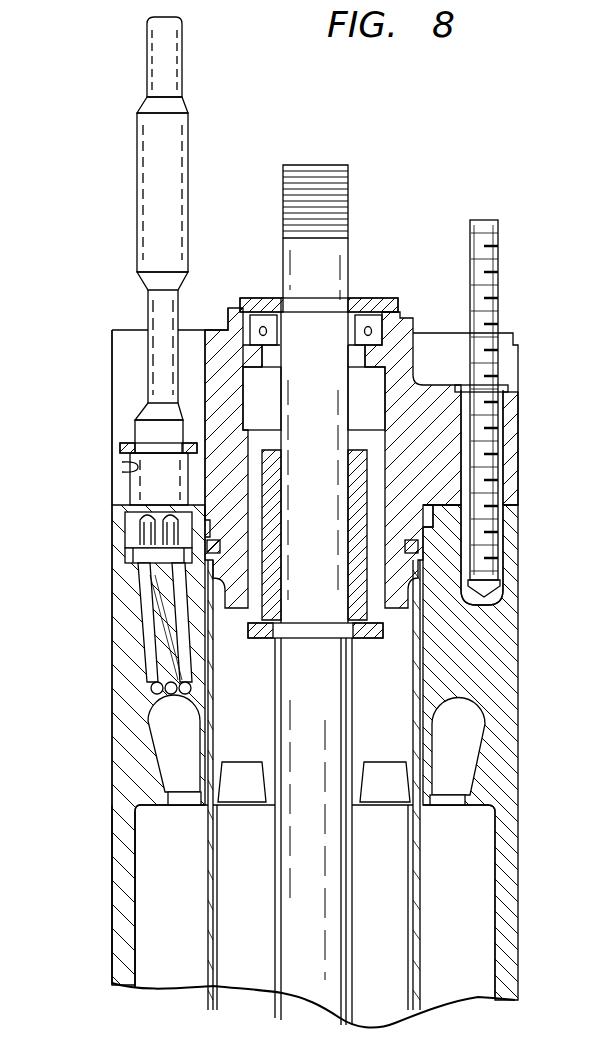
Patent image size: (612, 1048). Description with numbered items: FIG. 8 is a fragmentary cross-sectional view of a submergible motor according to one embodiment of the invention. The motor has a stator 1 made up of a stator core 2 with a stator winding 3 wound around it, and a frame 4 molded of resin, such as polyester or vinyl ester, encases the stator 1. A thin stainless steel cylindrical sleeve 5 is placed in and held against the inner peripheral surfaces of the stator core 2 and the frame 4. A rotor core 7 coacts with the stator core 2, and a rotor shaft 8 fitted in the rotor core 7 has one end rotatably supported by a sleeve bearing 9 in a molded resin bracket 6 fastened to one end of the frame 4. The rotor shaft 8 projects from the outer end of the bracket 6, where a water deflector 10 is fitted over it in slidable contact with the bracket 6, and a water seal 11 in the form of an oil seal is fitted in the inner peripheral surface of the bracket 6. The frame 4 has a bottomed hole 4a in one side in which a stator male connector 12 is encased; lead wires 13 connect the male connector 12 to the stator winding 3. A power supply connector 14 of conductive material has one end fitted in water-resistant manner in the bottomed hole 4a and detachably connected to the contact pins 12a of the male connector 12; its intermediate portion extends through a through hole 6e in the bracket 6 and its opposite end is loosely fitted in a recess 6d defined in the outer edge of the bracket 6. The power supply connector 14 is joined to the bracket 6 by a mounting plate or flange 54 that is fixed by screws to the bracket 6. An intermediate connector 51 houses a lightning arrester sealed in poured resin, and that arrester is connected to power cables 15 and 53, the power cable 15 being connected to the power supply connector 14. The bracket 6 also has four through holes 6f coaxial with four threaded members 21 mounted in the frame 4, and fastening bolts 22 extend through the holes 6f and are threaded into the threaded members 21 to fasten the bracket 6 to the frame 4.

The stator 1 is at (482, 828).
The stator core 2 is at (505, 942).
The stator winding 3 is at (475, 728).
The frame 4 is at (503, 642).
The bottomed hole 4a is at (135, 522).
The cylindrical sleeve 5 is at (420, 690).
The bracket 6 is at (510, 415).
The recess 6d is at (208, 345).
The through hole 6e is at (132, 468).
The through holes 6f is at (492, 460).
The rotor core 7 is at (405, 903).
The rotor shaft 8 is at (340, 250).
The sleeve bearing 9 is at (270, 535).
The water deflector 10 is at (358, 300).
The water seal 11 is at (380, 325).
The stator male connector 12 is at (127, 556).
The contact pins 12a is at (135, 540).
The lead wires 13 is at (148, 660).
The power supply connector 14 is at (143, 425).
The power cable 15 is at (148, 300).
The threaded members 21 is at (503, 540).
The fastening bolts 22 is at (500, 268).
The intermediate connector 51 is at (140, 190).
The power cable 53 is at (165, 62).
The mounting plate or flange 54 is at (120, 452).